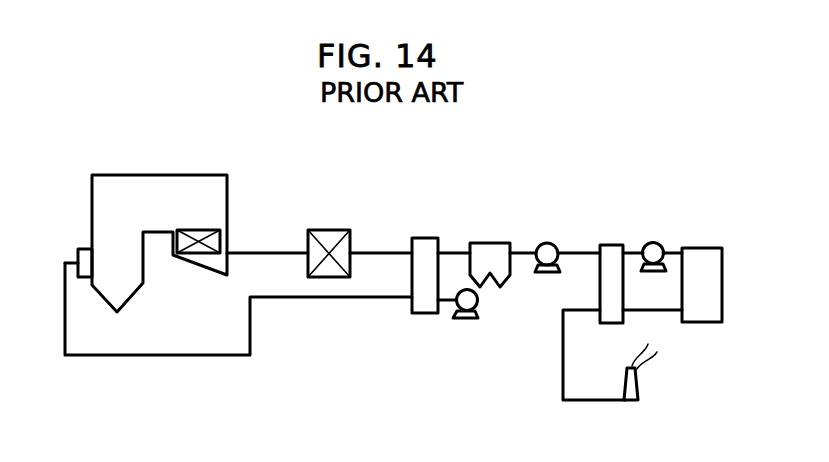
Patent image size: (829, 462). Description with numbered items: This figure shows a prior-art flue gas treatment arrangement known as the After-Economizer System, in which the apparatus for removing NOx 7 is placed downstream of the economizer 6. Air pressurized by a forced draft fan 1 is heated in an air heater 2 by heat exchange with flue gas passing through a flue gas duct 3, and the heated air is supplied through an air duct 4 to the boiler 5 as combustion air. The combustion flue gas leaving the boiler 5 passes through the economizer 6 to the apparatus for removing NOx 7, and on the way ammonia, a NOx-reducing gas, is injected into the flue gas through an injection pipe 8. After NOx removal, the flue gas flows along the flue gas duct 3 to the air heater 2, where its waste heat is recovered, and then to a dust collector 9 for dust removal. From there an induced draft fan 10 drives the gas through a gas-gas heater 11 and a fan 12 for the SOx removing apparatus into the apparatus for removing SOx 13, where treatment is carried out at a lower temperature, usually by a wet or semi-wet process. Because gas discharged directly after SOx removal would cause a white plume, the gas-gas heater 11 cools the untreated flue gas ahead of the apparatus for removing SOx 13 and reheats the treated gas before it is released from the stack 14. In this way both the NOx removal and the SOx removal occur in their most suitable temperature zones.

The forced draft fan 1 is at (472, 320).
The air heater 2 is at (418, 238).
The flue gas duct 3 is at (289, 253).
The air duct 4 is at (163, 356).
The boiler 5 is at (139, 183).
The economizer 6 is at (200, 230).
The apparatus for removing NOx 7 is at (325, 230).
The injection pipe 8 is at (268, 249).
The dust collector 9 is at (490, 243).
The induced draft fan 10 is at (547, 243).
The gas-gas heater 11 is at (610, 245).
The fan for the apparatus for removing SOx 12 is at (655, 243).
The apparatus for removing SOx 13 is at (705, 248).
The stack 14 is at (640, 383).